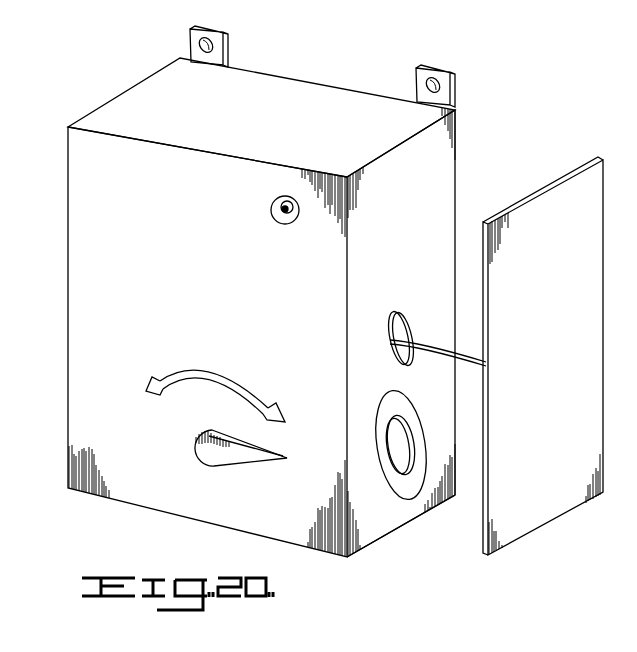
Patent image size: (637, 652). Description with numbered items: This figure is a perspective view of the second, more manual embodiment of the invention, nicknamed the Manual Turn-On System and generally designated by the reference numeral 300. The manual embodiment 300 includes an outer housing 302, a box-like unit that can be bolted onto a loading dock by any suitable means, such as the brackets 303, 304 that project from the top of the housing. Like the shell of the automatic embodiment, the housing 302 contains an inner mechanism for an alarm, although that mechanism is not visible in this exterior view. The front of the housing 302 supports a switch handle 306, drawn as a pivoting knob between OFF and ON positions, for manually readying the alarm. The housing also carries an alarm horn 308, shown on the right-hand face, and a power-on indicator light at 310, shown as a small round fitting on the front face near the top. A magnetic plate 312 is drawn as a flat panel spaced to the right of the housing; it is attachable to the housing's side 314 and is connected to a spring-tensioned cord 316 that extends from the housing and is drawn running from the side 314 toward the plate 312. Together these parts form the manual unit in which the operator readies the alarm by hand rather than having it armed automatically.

The manual embodiment 300 is at (126, 74).
The outer housing 302 is at (302, 88).
The bracket 303 is at (216, 28).
The bracket 304 is at (438, 66).
The switch handle 306 is at (232, 455).
The alarm horn 308 is at (408, 476).
The power-on indicator light 310 is at (295, 226).
The magnetic plate 312 is at (552, 192).
The housing side 314 is at (375, 528).
The spring-tensioned cord 316 is at (440, 343).